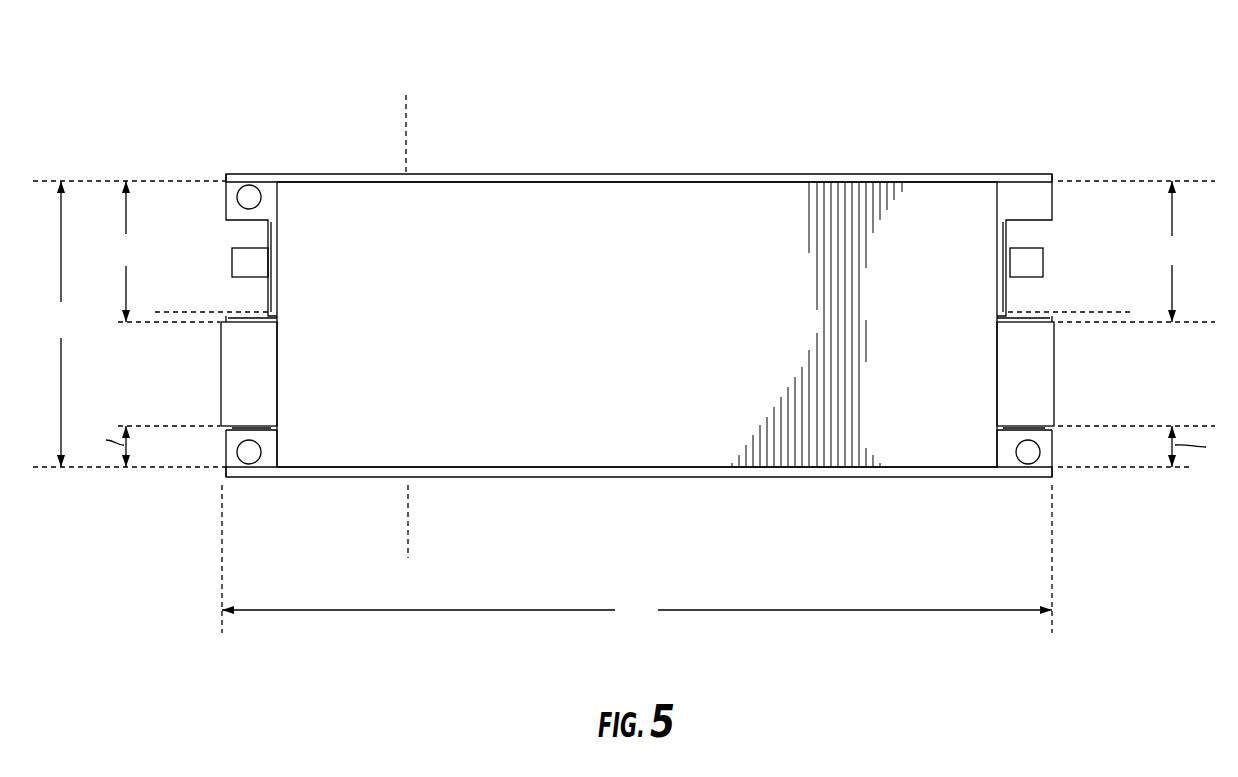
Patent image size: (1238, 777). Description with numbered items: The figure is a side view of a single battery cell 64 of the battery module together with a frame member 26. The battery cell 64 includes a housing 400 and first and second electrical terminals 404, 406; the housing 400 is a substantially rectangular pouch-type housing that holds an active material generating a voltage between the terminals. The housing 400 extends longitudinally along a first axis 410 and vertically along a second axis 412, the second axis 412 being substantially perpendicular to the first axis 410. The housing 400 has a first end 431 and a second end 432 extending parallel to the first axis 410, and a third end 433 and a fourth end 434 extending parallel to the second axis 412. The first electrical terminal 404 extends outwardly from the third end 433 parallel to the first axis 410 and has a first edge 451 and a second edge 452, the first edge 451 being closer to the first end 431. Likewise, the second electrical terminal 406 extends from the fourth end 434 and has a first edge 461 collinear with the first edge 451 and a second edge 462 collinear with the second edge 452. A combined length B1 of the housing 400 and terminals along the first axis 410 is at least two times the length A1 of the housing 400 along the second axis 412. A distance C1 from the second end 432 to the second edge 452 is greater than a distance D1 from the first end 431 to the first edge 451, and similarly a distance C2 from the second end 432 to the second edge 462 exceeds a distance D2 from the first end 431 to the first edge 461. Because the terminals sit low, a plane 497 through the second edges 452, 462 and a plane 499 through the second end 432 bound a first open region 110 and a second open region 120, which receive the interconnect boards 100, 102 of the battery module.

The battery cell 64 is at (691, 80).
The frame member 26 is at (257, 181).
The interconnect board 100 is at (268, 236).
The interconnect board 102 is at (1010, 238).
The first open region 110 is at (224, 228).
The second open region 120 is at (1030, 228).
The housing 400 is at (527, 198).
The first electrical terminal 404 is at (228, 370).
The second electrical terminal 406 is at (1053, 375).
The first axis 410 is at (167, 312).
The second axis 412 is at (408, 108).
The first end 431 is at (618, 468).
The second end 432 is at (663, 181).
The third end 433 is at (278, 456).
The fourth end 434 is at (1000, 458).
The first edge 451 is at (245, 432).
The second edge 452 is at (235, 320).
The first edge 461 is at (1037, 431).
The second edge 462 is at (1030, 322).
The plane 497 is at (188, 322).
The plane 499 is at (158, 180).
The length A1 is at (612, 324).
The combined length B1 is at (637, 559).
The distance C1 is at (123, 251).
The distance C2 is at (1168, 251).
The distance D1 is at (153, 444).
The distance D2 is at (1144, 446).